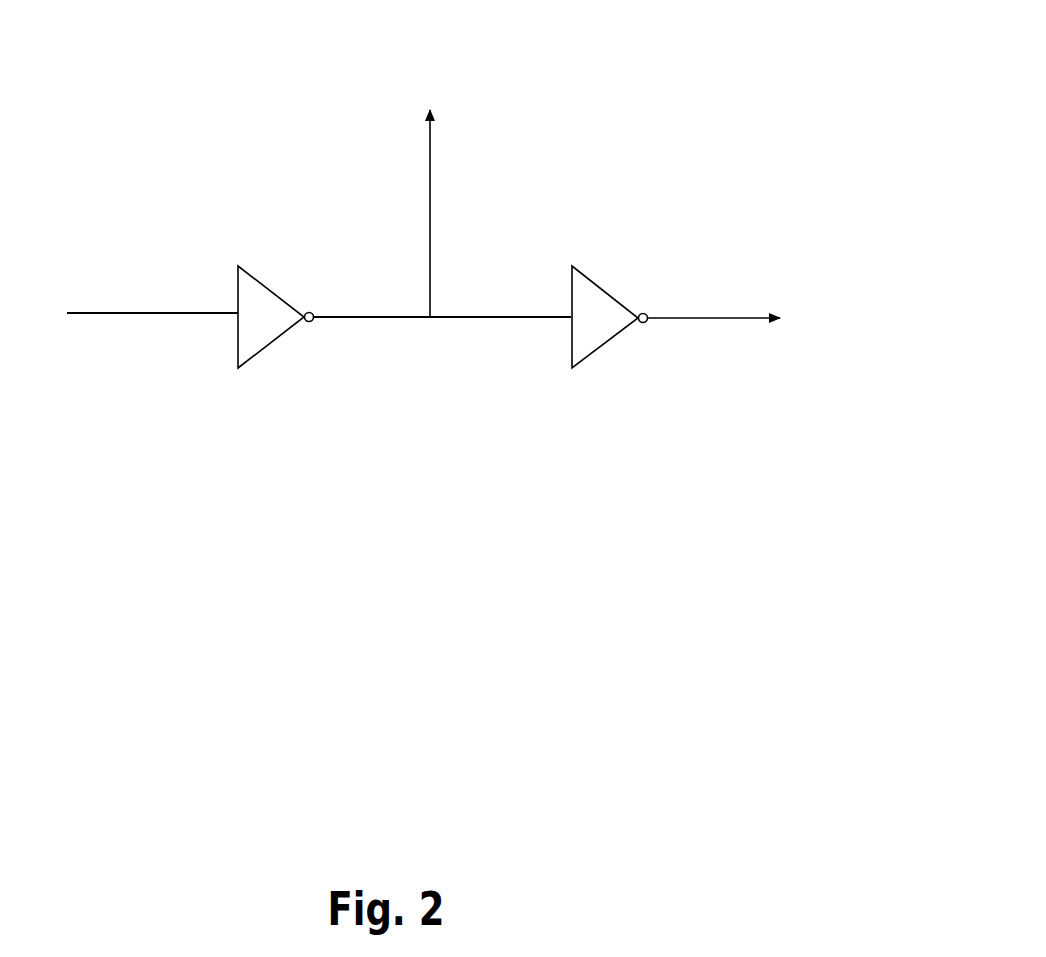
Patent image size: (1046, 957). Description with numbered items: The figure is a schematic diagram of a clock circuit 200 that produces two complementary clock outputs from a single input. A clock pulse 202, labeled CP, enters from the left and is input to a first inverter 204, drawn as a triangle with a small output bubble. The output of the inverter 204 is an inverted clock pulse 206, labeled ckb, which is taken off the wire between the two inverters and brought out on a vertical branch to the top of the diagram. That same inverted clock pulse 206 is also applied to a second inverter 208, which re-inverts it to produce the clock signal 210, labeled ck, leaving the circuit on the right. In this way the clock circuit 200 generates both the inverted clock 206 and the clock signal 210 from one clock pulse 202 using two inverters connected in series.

The clock circuit 200 is at (750, 628).
The clock pulse 202 is at (150, 327).
The inverter 204 is at (310, 353).
The inverted clock pulse 206 is at (422, 173).
The inverter 208 is at (642, 353).
The clock signal 210 is at (791, 308).